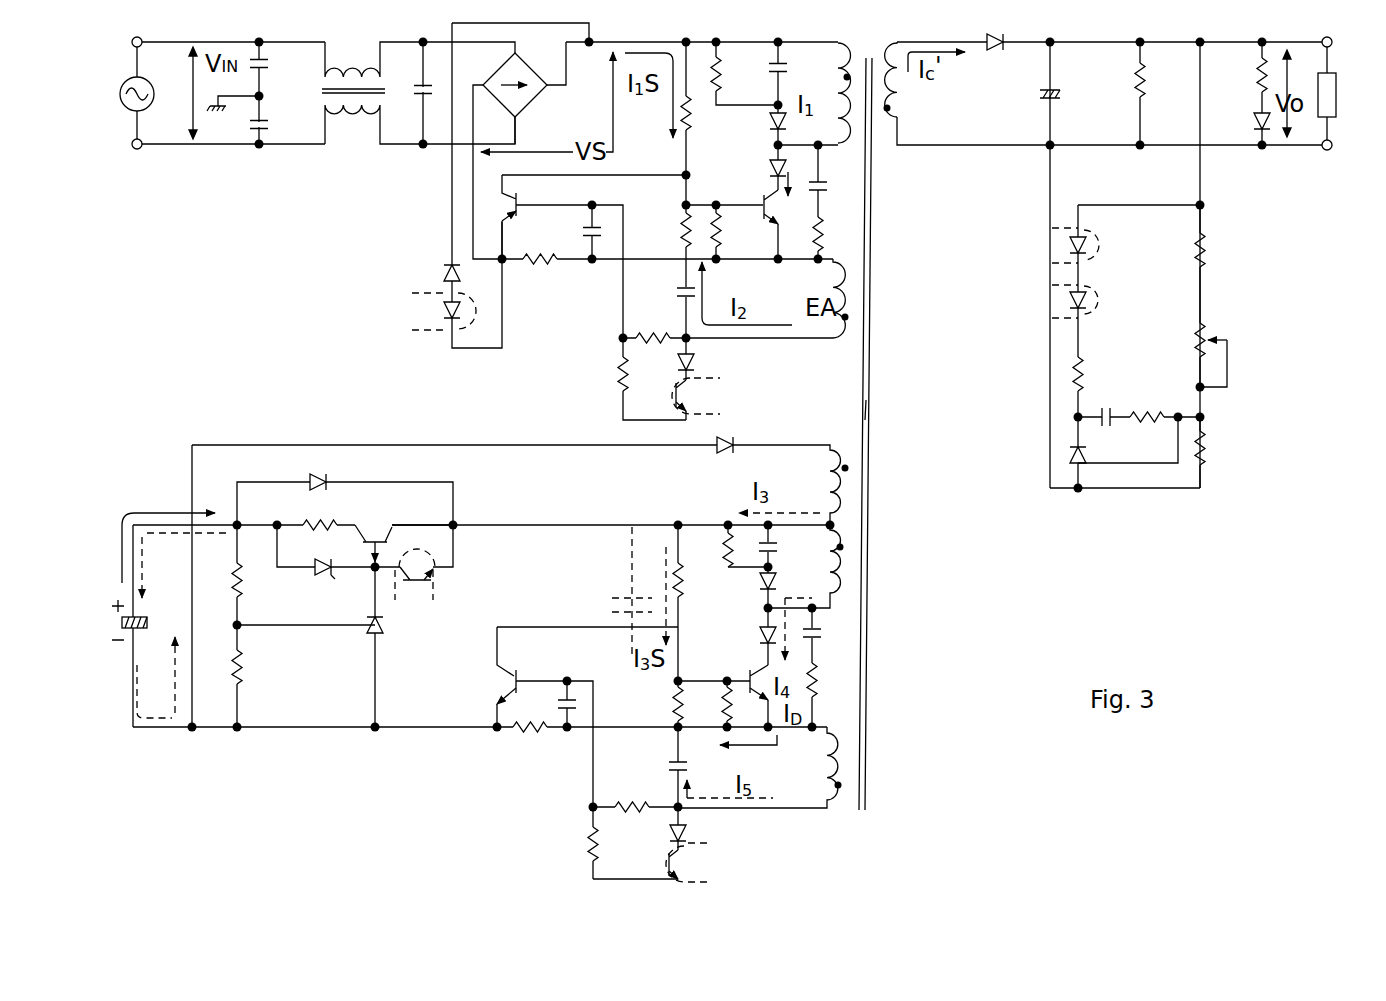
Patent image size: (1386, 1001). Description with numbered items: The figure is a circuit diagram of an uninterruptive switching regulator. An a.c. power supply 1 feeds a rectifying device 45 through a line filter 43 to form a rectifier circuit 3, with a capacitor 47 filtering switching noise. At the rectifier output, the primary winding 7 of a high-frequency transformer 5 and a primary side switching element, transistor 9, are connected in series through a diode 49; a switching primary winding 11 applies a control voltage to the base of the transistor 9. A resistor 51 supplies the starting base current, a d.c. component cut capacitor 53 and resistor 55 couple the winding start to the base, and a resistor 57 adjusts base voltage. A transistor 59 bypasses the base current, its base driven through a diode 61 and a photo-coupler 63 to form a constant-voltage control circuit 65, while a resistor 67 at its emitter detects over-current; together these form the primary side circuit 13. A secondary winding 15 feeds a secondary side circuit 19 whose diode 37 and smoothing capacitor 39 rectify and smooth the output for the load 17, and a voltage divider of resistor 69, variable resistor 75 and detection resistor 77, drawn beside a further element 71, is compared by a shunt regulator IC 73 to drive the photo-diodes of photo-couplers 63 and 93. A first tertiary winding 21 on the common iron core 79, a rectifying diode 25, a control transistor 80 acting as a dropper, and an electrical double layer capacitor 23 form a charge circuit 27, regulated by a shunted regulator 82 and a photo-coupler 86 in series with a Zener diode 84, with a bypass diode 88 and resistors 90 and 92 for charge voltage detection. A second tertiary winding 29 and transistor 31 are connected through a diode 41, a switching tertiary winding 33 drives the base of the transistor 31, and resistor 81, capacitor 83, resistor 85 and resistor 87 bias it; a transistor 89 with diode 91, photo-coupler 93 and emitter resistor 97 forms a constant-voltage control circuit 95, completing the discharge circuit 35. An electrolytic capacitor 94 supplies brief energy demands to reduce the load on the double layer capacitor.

The a.c. power supply 1 is at (155, 88).
The rectifier circuit 3 is at (440, 168).
The high-frequency transformer 5 is at (878, 250).
The primary winding 7 is at (852, 147).
The primary side switching element (transistor) 9 is at (760, 205).
The switching primary winding 11 is at (836, 341).
The primary side circuit 13 is at (410, 228).
The secondary winding 15 is at (898, 100).
The load 17 is at (1337, 96).
The secondary side circuit 19 is at (1010, 166).
The first tertiary winding 21 is at (830, 472).
The electrical double layer capacitor 23 is at (148, 626).
The rectifying diode 25 is at (726, 455).
The charge circuit 27 is at (222, 462).
The second tertiary winding 29 is at (830, 562).
The tertiary side switching element (transistor) 31 is at (757, 672).
The switching tertiary winding 33 is at (826, 761).
The discharge circuit 35 is at (465, 690).
The diode 37 is at (995, 51).
The smoothing capacitor 39 is at (1062, 93).
The diode 41 is at (760, 629).
The line filter 43 is at (352, 105).
The rectifying device 45 is at (527, 98).
The capacitor 47 is at (269, 64).
The diode 49 is at (768, 166).
The resistor 51 is at (680, 116).
The d.c. component cut capacitor 53 is at (679, 292).
The resistor 55 is at (680, 238).
The resistor for base voltage adjustment 57 is at (722, 229).
The transistor 59 is at (521, 222).
The diode 61 is at (697, 362).
The photo-coupler 63 is at (706, 408).
The constant-voltage control circuit 65 is at (645, 404).
The resistor 67 is at (542, 264).
The voltage detection voltage-divided resistor 69 is at (1207, 254).
The resistor 71 is at (1087, 375).
The comparative amplifying IC (shunt regulator) 73 is at (1070, 460).
The variable resistor 75 is at (1206, 331).
The detection resistor 77 is at (1209, 457).
The iron core 79 is at (872, 407).
The constant-voltage constant-current control transistor 80 is at (376, 533).
The resistor 81 is at (674, 581).
The shunted regulator 82 is at (379, 637).
The d.c. component cut capacitor 83 is at (672, 766).
The Zener diode 84 is at (441, 270).
The resistor 85 is at (670, 701).
The photo-coupler 86 is at (432, 336).
The base voltage adjustment resistor 87 is at (724, 738).
The diode 88 is at (322, 472).
The transistor 89 is at (494, 675).
The partial-potential resistor 90 is at (245, 590).
The diode 91 is at (690, 832).
The detection resistor 92 is at (245, 665).
The photo-coupler 93 is at (1095, 300).
The electrolytic capacitor 94 is at (612, 612).
The constant-voltage control circuit 95 is at (627, 858).
The resistor 97 is at (531, 741).